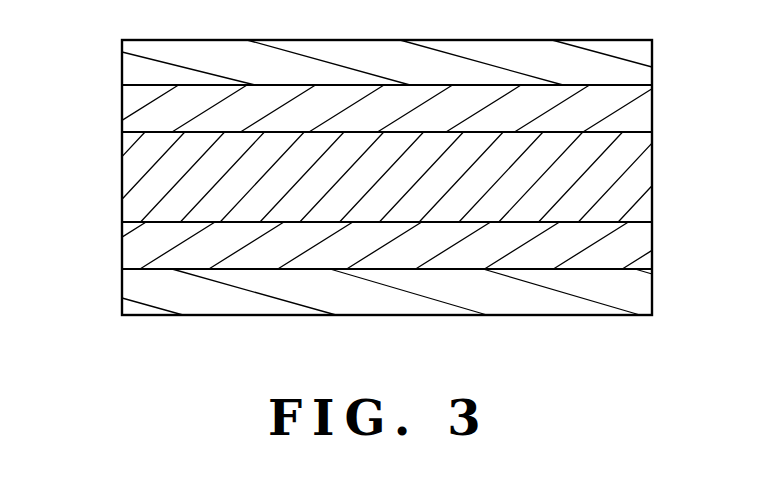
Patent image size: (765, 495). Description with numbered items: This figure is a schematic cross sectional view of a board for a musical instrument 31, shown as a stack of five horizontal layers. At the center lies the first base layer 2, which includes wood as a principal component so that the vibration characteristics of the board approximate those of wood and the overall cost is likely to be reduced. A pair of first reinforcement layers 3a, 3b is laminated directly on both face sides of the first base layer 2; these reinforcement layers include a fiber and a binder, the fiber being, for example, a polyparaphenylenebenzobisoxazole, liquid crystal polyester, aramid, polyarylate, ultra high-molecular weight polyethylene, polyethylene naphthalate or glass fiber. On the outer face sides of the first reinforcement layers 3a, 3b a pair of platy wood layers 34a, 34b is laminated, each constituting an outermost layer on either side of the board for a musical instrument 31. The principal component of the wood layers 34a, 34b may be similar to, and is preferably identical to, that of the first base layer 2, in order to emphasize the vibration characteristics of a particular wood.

The board for a musical instrument 31 is at (90, 108).
The wood layer 34a is at (637, 61).
The first reinforcement layer 3a is at (637, 111).
The first base layer 2 is at (637, 176).
The first reinforcement layer 3b is at (637, 247).
The wood layer 34b is at (637, 298).